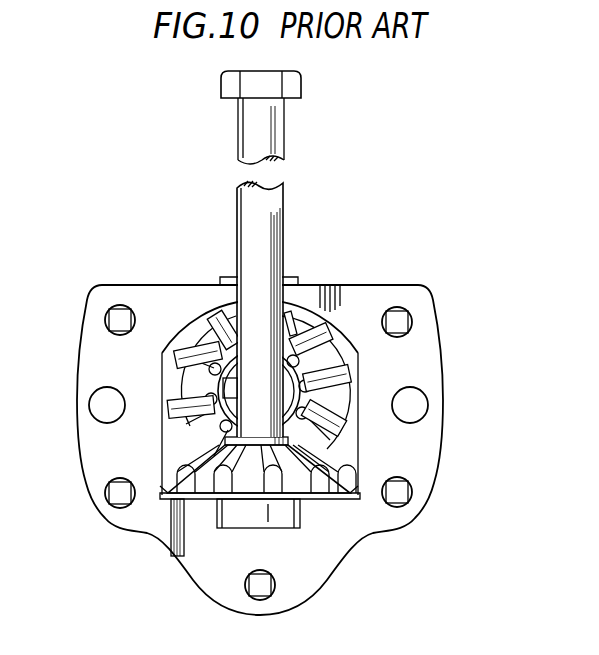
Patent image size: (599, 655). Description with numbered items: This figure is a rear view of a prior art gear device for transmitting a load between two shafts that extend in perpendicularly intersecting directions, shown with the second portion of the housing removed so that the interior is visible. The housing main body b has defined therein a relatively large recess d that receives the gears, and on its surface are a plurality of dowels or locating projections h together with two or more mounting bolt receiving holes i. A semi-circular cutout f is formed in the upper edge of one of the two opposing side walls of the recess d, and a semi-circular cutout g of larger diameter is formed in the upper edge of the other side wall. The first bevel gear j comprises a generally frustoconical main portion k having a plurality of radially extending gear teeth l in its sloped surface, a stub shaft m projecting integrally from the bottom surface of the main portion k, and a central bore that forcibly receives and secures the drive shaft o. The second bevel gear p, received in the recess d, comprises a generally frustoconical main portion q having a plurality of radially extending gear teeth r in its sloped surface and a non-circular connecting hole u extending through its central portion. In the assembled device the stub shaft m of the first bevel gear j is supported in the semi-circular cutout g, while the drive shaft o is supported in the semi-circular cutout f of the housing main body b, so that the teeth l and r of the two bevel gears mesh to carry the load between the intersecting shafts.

The housing main body b is at (444, 346).
The dowels or locating projections h is at (108, 318).
The mounting bolt receiving holes i is at (97, 400).
The main portion q is at (352, 356).
The second bevel gear p is at (232, 318).
The non-circular connecting hole u is at (344, 414).
The gear teeth l is at (250, 458).
The gear teeth r is at (184, 345).
The recess d is at (352, 456).
The first bevel gear j is at (372, 497).
The semi-circular cutout g is at (323, 482).
The main portion k is at (252, 485).
The stub shaft m is at (232, 520).
The semi-circular cutout f is at (275, 283).
The drive shaft o is at (285, 135).